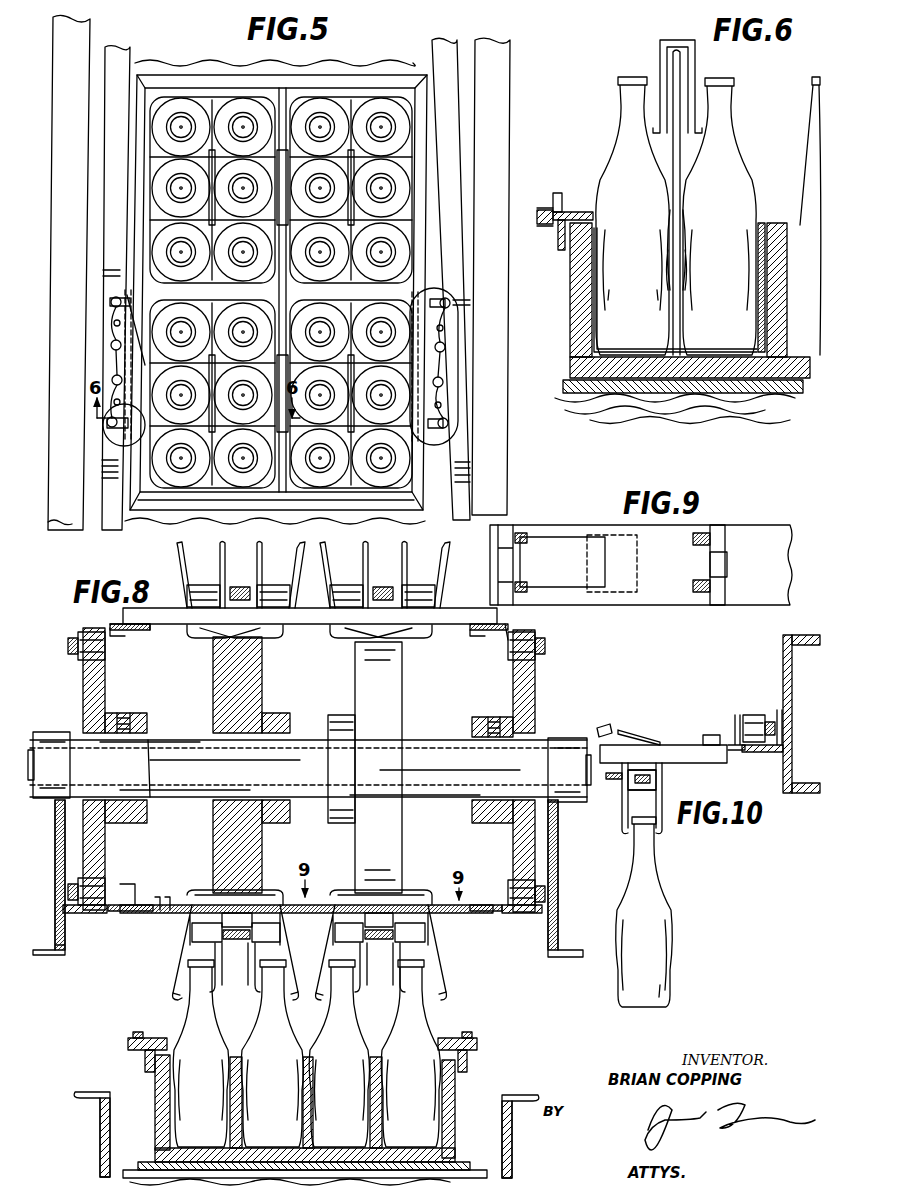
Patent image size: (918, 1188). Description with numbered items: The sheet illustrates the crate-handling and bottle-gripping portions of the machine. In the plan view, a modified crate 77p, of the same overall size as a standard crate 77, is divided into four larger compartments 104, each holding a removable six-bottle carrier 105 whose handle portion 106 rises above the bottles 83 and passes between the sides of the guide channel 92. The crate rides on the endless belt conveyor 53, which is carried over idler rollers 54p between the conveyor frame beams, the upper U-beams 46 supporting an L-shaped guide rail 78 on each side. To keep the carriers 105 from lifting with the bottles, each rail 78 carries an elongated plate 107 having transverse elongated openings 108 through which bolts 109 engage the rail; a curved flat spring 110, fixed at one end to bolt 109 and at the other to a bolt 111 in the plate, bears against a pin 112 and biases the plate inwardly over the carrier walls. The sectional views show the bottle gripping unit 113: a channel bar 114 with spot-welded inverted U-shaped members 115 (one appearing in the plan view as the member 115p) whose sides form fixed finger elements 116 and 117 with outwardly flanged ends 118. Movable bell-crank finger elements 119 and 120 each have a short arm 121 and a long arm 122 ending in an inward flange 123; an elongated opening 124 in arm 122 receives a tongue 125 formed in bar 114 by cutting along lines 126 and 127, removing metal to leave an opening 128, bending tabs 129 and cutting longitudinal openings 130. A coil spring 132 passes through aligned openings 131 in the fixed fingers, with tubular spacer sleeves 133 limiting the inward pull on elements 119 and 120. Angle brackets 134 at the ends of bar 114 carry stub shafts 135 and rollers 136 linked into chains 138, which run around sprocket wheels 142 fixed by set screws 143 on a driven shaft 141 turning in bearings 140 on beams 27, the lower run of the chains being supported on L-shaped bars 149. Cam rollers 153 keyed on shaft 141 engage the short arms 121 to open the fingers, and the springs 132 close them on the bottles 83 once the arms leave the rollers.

In FIG. 8, the beam 27 is at (55, 832).
In FIG. 10, the beam 27 is at (792, 690).
In FIG. 5, the upper U-beam 46 is at (53, 528).
In FIG. 6, the upper U-beam 46 is at (556, 415).
In FIG. 8, the upper U-beam 46 is at (100, 1122).
In FIG. 5, the endless belt conveyor 53 is at (368, 66).
In FIG. 6, the endless belt conveyor 53 is at (570, 368).
In FIG. 8, the endless belt conveyor 53 is at (455, 1160).
In FIG. 5, the idler roller 54p is at (468, 280).
In FIG. 6, the idler roller 54p is at (557, 262).
In FIG. 8, the idler roller 54p is at (128, 1170).
In FIG. 5, the modified crate 77p is at (420, 270).
In FIG. 6, the modified crate 77p is at (570, 313).
In FIG. 8, the crate 77 is at (455, 1130).
In FIG. 5, the L-shaped guide rail 78 is at (110, 530).
In FIG. 6, the L-shaped guide rail 78 is at (557, 245).
In FIG. 8, the L-shaped guide rail 78 is at (145, 1060).
In FIG. 5, the bottle 83 is at (188, 104).
In FIG. 6, the bottle 83 is at (632, 77).
In FIG. 8, the bottle 83 is at (215, 1030).
In FIG. 10, the bottle 83 is at (672, 882).
In FIG. 6, the channel 92 is at (660, 46).
In FIG. 5, the compartment 104 is at (283, 88).
In FIG. 6, the compartment 104 is at (762, 225).
In FIG. 5, the six-bottle carrier 105 is at (232, 112).
In FIG. 6, the six-bottle carrier 105 is at (594, 330).
In FIG. 5, the handle portion 106 is at (213, 178).
In FIG. 6, the handle portion 106 is at (681, 70).
In FIG. 5, the elongated plate 107 is at (108, 365).
In FIG. 6, the elongated plate 107 is at (590, 210).
In FIG. 8, the elongated plate 107 is at (160, 1038).
In FIG. 5, the transverse elongated opening 108 is at (120, 300).
In FIG. 6, the transverse elongated opening 108 is at (575, 212).
In FIG. 5, the bolt 109 is at (110, 302).
In FIG. 6, the bolt 109 is at (540, 212).
In FIG. 8, the bolt 109 is at (132, 1034).
In FIG. 5, the flat spring 110 is at (111, 344).
In FIG. 6, the flat spring 110 is at (542, 208).
In FIG. 5, the bolt 111 is at (112, 353).
In FIG. 5, the pin 112 is at (114, 323).
In FIG. 6, the pin 112 is at (560, 193).
In FIG. 8, the bottle gripping unit 113 is at (170, 548).
In FIG. 10, the bottle gripping unit 113 is at (620, 822).
In FIG. 9, the elongated channel bar 114 is at (600, 525).
In FIG. 8, the elongated channel bar 114 is at (182, 626).
In FIG. 10, the elongated channel bar 114 is at (717, 763).
In FIG. 8, the inverted U-shaped member 115 is at (208, 895).
In FIG. 9, the carrier plate 115p is at (615, 605).
In FIG. 8, the finger element 116 is at (222, 960).
In FIG. 8, the finger element 117 is at (255, 975).
In FIG. 10, the finger element 117 is at (628, 810).
In FIG. 8, the flanged end 118 is at (255, 993).
In FIG. 10, the flanged end 118 is at (626, 834).
In FIG. 9, the movable finger element 119 is at (595, 535).
In FIG. 8, the movable finger element 119 is at (192, 893).
In FIG. 8, the movable finger element 120 is at (328, 884).
In FIG. 10, the movable finger element 120 is at (668, 745).
In FIG. 9, the short arm 121 is at (562, 537).
In FIG. 8, the short arm 121 is at (205, 640).
In FIG. 10, the short arm 121 is at (604, 728).
In FIG. 9, the long arm 122 is at (710, 562).
In FIG. 8, the long arm 122 is at (305, 980).
In FIG. 10, the long arm 122 is at (662, 785).
In FIG. 8, the flanged end 123 is at (177, 1000).
In FIG. 10, the flanged end 123 is at (660, 835).
In FIG. 9, the elongated transverse opening 124 is at (705, 580).
In FIG. 8, the elongated transverse opening 124 is at (188, 893).
In FIG. 9, the tongue 125 is at (712, 535).
In FIG. 8, the tongue 125 is at (430, 927).
In FIG. 9, the cut line 126 is at (503, 598).
In FIG. 9, the cut line 127 is at (518, 530).
In FIG. 9, the opening 128 is at (728, 565).
In FIG. 8, the opening 128 is at (345, 895).
In FIG. 9, the tab 129 is at (720, 545).
In FIG. 9, the longitudinal opening 130 is at (527, 537).
In FIG. 8, the aligned opening 131 is at (232, 927).
In FIG. 8, the coil spring 132 is at (240, 587).
In FIG. 10, the coil spring 132 is at (616, 778).
In FIG. 8, the tubular spacer sleeve 133 is at (203, 585).
In FIG. 10, the tubular spacer sleeve 133 is at (645, 792).
In FIG. 8, the angle bracket 134 is at (118, 640).
In FIG. 10, the angle bracket 134 is at (736, 730).
In FIG. 8, the stub shaft 135 is at (68, 648).
In FIG. 10, the stub shaft 135 is at (768, 722).
In FIG. 8, the roller 136 is at (88, 634).
In FIG. 10, the roller 136 is at (757, 715).
In FIG. 8, the chain 138 is at (66, 643).
In FIG. 8, the bearing 140 is at (62, 724).
In FIG. 8, the driven shaft 141 is at (150, 742).
In FIG. 8, the sprocket wheel 142 is at (83, 688).
In FIG. 8, the set screw 143 is at (495, 710).
In FIG. 8, the L-shaped bar 149 is at (90, 914).
In FIG. 10, the L-shaped bar 149 is at (775, 753).
In FIG. 8, the cam roller 153 is at (262, 698).